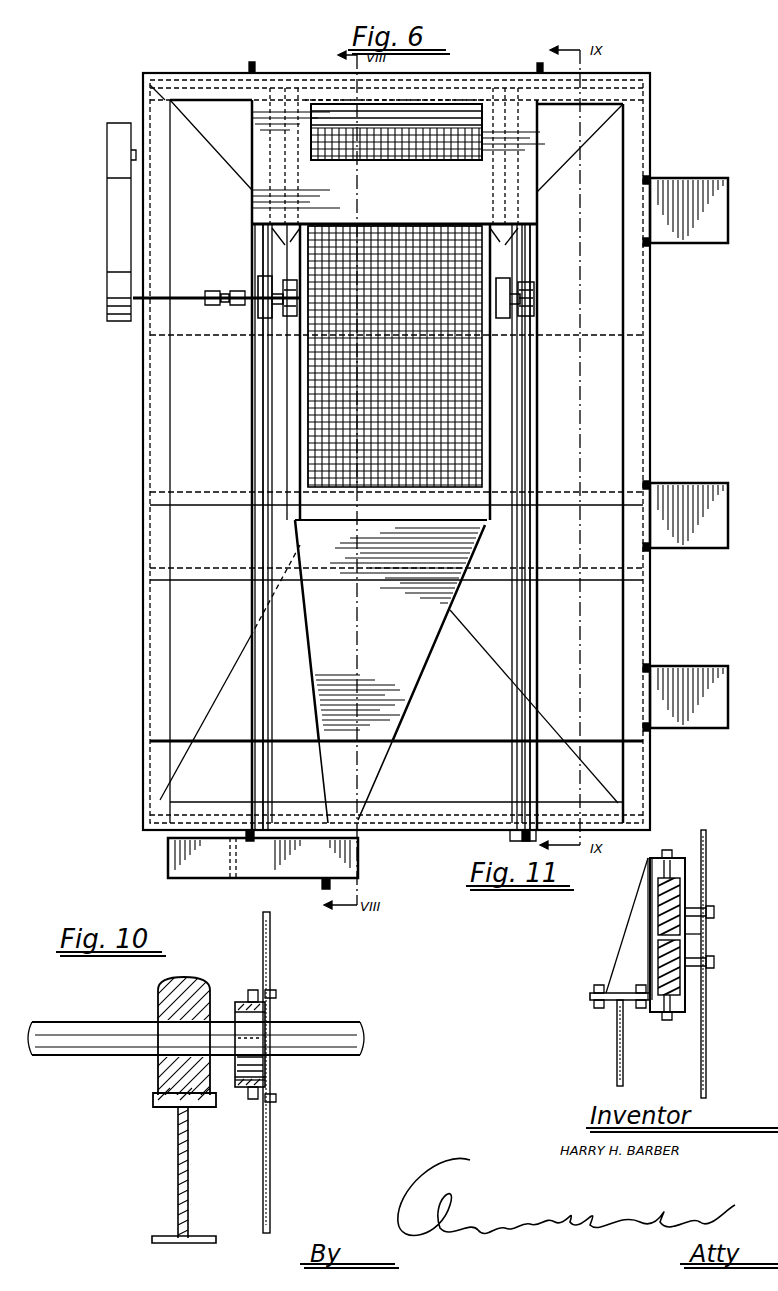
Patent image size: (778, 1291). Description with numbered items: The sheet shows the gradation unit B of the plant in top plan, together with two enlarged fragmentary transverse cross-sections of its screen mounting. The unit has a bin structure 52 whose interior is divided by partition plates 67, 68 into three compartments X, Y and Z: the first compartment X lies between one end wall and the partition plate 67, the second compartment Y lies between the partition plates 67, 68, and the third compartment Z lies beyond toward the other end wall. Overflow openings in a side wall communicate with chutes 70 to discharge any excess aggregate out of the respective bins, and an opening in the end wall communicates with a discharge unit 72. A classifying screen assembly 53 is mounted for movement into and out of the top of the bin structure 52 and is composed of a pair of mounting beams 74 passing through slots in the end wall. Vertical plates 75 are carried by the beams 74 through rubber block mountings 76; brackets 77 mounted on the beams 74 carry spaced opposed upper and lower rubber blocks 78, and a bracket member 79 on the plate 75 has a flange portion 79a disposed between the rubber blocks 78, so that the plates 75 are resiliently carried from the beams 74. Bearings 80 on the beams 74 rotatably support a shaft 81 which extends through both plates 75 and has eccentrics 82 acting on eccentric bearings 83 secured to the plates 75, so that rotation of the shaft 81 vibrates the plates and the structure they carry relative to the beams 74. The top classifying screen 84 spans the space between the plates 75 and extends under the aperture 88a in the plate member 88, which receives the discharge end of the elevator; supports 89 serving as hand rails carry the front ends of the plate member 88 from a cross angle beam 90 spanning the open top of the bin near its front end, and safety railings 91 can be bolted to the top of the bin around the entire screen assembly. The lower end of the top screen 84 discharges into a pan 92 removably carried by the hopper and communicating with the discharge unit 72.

In FIG. 6, the gradation unit B is at (656, 74).
In FIG. 6, the bin structure 52 is at (652, 370).
In FIG. 6, the classifying screen assembly 53 is at (536, 262).
In FIG. 6, the partition plate 67 is at (204, 505).
In FIG. 6, the partition plate 68 is at (214, 582).
In FIG. 6, the chute 70 is at (702, 178).
In FIG. 6, the discharge unit 72 is at (168, 860).
In FIG. 6, the mounting beam 74 is at (258, 686).
In FIG. 10, the mounting beam 74 is at (180, 1160).
In FIG. 11, the mounting beam 74 is at (618, 1048).
In FIG. 6, the vertical plate 75 is at (262, 404).
In FIG. 10, the vertical plate 75 is at (270, 1134).
In FIG. 11, the vertical plate 75 is at (706, 1036).
In FIG. 11, the rubber block mounting 76 is at (686, 858).
In FIG. 11, the bracket 77 is at (632, 950).
In FIG. 11, the rubber block 78 is at (656, 900).
In FIG. 11, the bracket member 79 is at (690, 926).
In FIG. 11, the flange portion 79a is at (704, 952).
In FIG. 6, the bearing 80 is at (258, 346).
In FIG. 10, the bearing 80 is at (160, 997).
In FIG. 6, the shaft 81 is at (190, 298).
In FIG. 10, the shaft 81 is at (92, 1010).
In FIG. 10, the eccentric 82 is at (240, 1002).
In FIG. 6, the eccentric bearing 83 is at (288, 334).
In FIG. 10, the eccentric bearing 83 is at (238, 1088).
In FIG. 6, the top classifying screen 84 is at (462, 398).
In FIG. 6, the plate member 88 is at (312, 100).
In FIG. 6, the aperture 88a is at (430, 112).
In FIG. 6, the support 89 is at (252, 246).
In FIG. 6, the cross angle beam 90 is at (218, 744).
In FIG. 6, the safety railing 91 is at (144, 694).
In FIG. 6, the pan 92 is at (396, 682).
In FIG. 6, the first compartment X is at (602, 185).
In FIG. 6, the second compartment Y is at (592, 525).
In FIG. 6, the third compartment Z is at (600, 634).